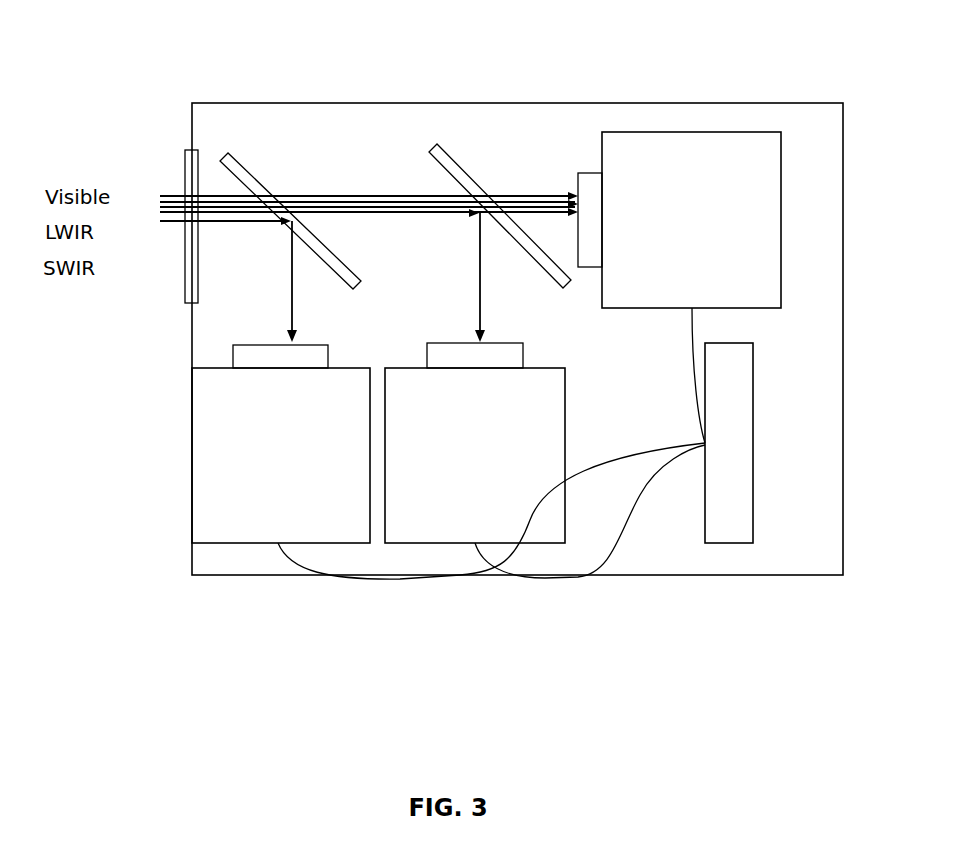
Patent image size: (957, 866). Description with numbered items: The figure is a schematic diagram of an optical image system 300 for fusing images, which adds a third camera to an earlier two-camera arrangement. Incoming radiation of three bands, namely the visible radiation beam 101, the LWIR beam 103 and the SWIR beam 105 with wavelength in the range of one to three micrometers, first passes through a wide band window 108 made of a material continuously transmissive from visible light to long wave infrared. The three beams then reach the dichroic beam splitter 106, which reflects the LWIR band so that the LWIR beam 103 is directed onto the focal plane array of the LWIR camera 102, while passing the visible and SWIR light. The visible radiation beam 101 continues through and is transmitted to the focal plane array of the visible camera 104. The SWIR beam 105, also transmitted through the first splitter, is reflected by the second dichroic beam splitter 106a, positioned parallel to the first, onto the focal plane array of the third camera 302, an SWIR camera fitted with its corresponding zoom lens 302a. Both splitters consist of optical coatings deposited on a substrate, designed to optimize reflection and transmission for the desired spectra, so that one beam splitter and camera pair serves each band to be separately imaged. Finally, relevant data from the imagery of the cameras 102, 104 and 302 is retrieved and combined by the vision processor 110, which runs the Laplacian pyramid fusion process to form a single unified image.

The visible radiation beam 101 is at (541, 213).
The LWIR camera 102 is at (222, 525).
The LWIR beam 103 is at (292, 297).
The visible camera 104 is at (753, 207).
The SWIR beam 105 is at (482, 264).
The dichroic beam splitter 106 is at (232, 163).
The second dichroic beam splitter 106a is at (452, 173).
The wide band window 108 is at (188, 152).
The vision processor 110 is at (737, 482).
The optical image system 300 is at (748, 676).
The third camera 302 is at (430, 512).
The zoom lens 302a is at (517, 347).